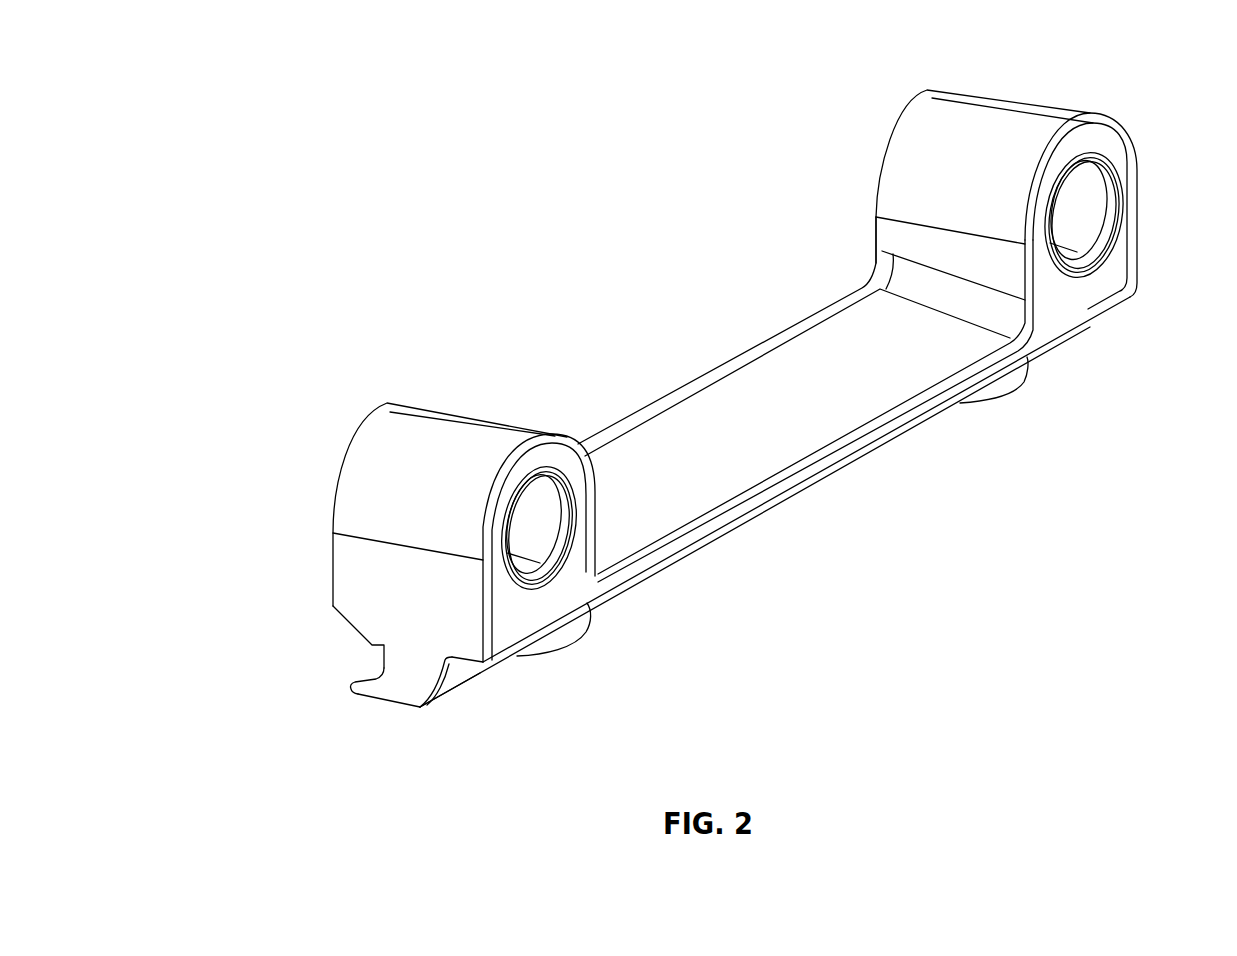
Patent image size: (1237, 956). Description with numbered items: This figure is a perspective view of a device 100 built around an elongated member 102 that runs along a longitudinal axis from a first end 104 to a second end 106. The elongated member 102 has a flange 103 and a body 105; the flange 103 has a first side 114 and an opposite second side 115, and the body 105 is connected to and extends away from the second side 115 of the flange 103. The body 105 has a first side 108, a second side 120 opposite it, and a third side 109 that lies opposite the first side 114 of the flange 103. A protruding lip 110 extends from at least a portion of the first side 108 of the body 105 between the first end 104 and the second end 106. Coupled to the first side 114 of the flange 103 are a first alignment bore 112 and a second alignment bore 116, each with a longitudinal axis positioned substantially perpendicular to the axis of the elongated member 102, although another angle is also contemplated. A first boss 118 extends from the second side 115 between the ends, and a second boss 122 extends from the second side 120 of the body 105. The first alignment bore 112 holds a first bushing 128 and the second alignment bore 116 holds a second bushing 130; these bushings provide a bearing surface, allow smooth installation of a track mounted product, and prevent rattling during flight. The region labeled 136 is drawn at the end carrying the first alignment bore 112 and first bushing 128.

The device 100 is at (280, 210).
The elongated member 102 is at (893, 447).
The flange 103 is at (655, 443).
The first end 104 is at (334, 681).
The body 105 is at (403, 675).
The second end 106 is at (1155, 302).
The first side of the body 108 is at (342, 627).
The third side of the body 109 is at (409, 718).
The protruding lip 110 is at (377, 686).
The first alignment bore 112 is at (472, 413).
The first side of the flange 114 is at (777, 442).
The second side of the flange 115 is at (468, 671).
The second alignment bore 116 is at (993, 117).
The first boss 118 is at (543, 655).
The second side of the body 120 is at (457, 704).
The second boss 122 is at (1003, 398).
The first bushing 128 is at (547, 523).
The second bushing 130 is at (1070, 255).
The first boss 136 is at (374, 415).